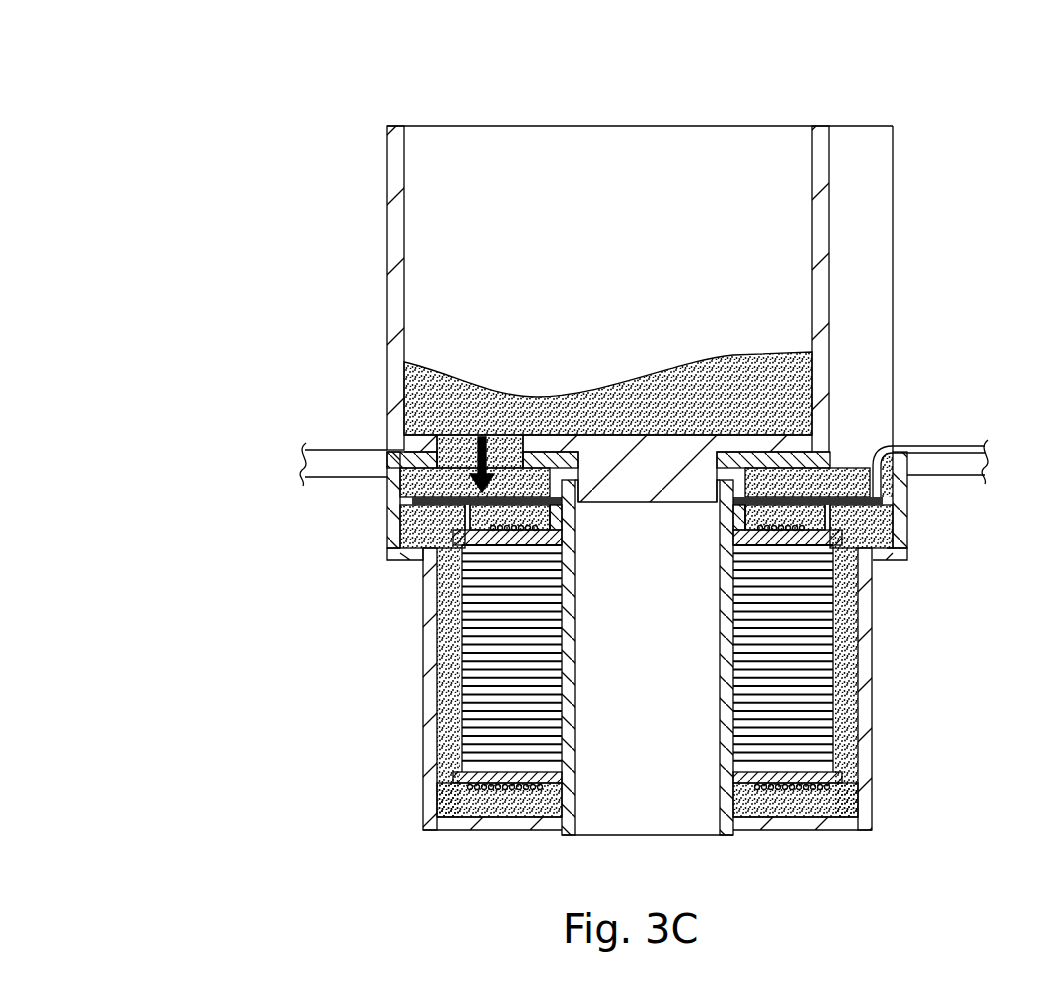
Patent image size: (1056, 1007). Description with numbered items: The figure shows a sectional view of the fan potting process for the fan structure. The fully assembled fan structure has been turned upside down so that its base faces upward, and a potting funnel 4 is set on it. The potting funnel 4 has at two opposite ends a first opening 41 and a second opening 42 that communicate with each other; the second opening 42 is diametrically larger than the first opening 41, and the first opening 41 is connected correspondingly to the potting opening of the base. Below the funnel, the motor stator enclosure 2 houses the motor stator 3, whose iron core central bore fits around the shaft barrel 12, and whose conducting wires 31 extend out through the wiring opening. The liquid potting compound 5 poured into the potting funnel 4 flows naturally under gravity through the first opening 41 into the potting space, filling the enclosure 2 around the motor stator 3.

The motor stator enclosure 2 is at (475, 818).
The motor stator 3 is at (820, 696).
The potting funnel 4 is at (387, 240).
The potting compound 5 is at (412, 390).
The shaft barrel 12 is at (723, 835).
The conducting wires 31 is at (943, 447).
The first opening 41 is at (437, 442).
The second opening 42 is at (521, 126).